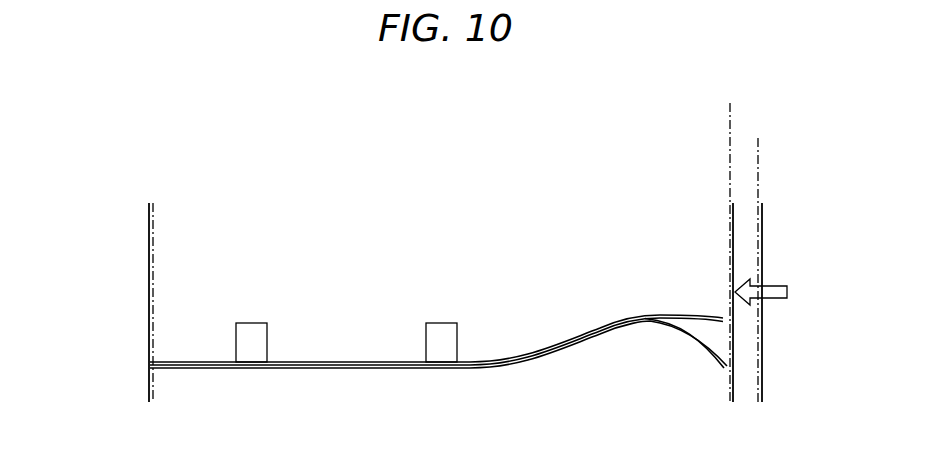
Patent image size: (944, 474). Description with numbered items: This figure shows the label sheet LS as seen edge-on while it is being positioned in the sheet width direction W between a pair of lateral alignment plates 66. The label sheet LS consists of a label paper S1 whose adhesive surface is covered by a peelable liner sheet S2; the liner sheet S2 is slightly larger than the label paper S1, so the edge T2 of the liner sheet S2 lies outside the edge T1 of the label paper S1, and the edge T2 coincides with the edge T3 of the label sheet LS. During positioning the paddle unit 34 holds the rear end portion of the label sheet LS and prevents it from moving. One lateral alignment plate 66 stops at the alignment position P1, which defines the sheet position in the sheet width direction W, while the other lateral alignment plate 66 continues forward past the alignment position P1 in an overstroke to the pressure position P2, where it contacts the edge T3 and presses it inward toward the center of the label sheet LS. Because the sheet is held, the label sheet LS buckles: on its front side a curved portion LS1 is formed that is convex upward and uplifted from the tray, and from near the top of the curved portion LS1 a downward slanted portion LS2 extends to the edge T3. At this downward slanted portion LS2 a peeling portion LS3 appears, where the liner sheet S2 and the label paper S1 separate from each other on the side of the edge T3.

The lateral alignment plate 66 is at (148, 222).
The paddle unit 34 is at (253, 333).
The label sheet LS is at (383, 270).
The label paper S1 is at (309, 360).
The liner sheet S2 is at (364, 370).
The curved portion LS1 is at (602, 329).
The downward slanted portion LS2 is at (700, 346).
The peeling portion LS3 is at (708, 330).
The edge of the label paper T1 is at (150, 362).
The edge of the liner sheet T2 is at (445, 355).
The edge of the label sheet T3 is at (150, 368).
The alignment position P1 is at (770, 150).
The pressure position P2 is at (742, 117).
The sheet width direction W is at (467, 418).